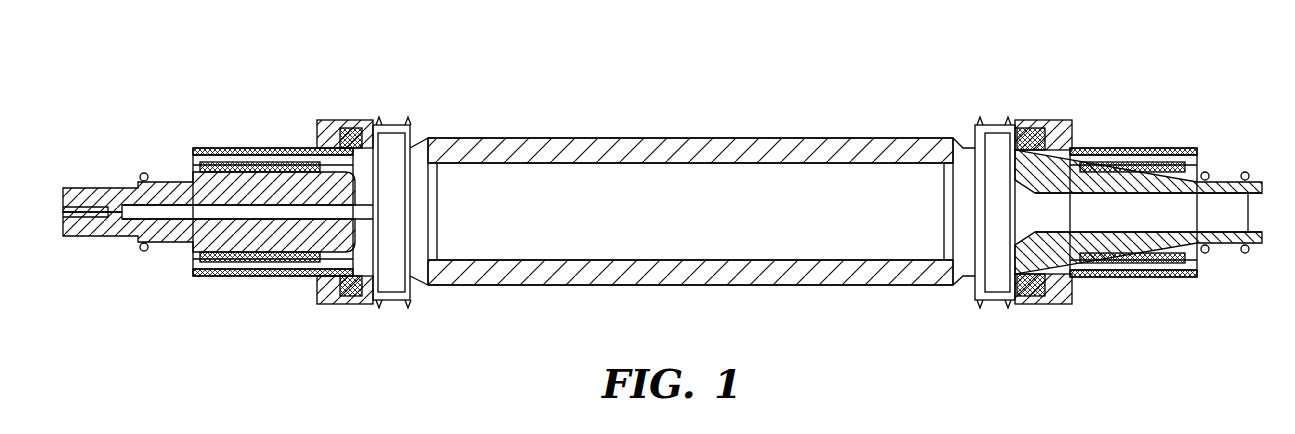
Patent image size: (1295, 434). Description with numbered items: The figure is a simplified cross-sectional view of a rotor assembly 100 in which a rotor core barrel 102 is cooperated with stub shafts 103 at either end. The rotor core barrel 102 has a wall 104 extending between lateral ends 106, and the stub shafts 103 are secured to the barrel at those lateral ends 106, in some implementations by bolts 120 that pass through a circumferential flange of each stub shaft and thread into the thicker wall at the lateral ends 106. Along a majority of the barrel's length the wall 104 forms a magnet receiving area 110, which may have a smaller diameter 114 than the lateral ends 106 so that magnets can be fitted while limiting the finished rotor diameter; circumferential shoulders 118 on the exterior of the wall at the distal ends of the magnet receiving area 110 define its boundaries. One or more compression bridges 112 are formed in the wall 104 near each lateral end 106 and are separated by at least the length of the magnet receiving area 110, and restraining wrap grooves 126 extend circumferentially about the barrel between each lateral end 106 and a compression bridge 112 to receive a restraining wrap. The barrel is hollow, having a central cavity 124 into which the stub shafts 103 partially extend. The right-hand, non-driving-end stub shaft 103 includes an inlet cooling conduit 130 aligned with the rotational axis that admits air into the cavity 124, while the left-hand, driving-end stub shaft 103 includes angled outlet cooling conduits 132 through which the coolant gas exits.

The rotor assembly 100 is at (603, 80).
The rotor core barrel 102 is at (677, 137).
The stub shafts 103 is at (164, 167).
The wall 104 is at (862, 140).
The lateral ends 106 is at (357, 111).
The magnet receiving area 110 is at (530, 133).
The compression bridges 112 is at (397, 125).
The smaller diameter 114 is at (775, 142).
The circumferential shoulders 118 is at (425, 292).
The bolts 120 is at (358, 128).
The central cavity 124 is at (664, 208).
The restraining wrap grooves 126 is at (374, 302).
The inlet cooling conduit 130 is at (1212, 222).
The outlet cooling conduits 132 is at (330, 168).